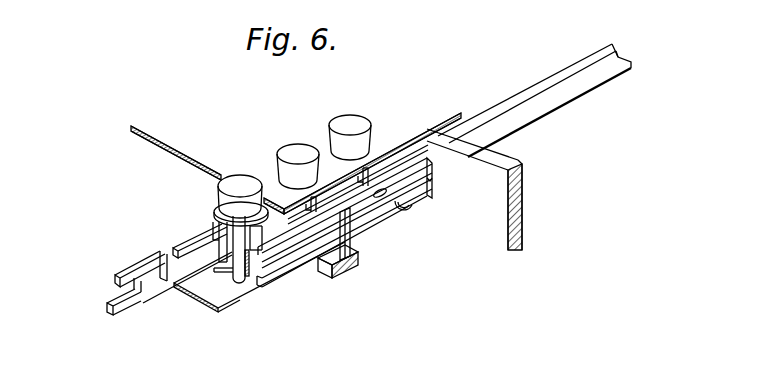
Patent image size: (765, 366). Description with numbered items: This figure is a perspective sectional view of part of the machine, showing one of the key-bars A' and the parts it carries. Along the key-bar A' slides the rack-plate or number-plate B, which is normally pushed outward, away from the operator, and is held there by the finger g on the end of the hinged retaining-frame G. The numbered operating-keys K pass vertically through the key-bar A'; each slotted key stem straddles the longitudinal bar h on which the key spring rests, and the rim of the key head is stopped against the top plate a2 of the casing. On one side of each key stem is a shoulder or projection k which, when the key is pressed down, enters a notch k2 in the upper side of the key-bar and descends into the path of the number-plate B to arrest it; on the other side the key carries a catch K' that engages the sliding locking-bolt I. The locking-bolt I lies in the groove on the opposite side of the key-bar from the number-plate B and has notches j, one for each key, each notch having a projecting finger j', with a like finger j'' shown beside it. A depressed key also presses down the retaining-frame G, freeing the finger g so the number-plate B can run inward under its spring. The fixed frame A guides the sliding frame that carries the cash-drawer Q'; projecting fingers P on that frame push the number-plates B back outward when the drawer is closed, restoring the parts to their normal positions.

The top plate a2 is at (296, 168).
The fixed frame A is at (474, 189).
The sliding number-plate B is at (534, 100).
The operating-key K is at (292, 162).
The catch K' is at (223, 241).
The longitudinal bar h is at (218, 273).
The key-bar A' is at (344, 222).
The shoulder or projection k is at (321, 199).
The notch k2 is at (323, 260).
The finger g is at (404, 213).
The projecting finger P is at (351, 234).
The cash-drawer Q' is at (354, 261).
The hinged retaining-frame G is at (259, 281).
The locking-bolt I is at (142, 294).
The projecting finger j' is at (131, 269).
The notch j is at (159, 257).
The arm j'' is at (200, 241).